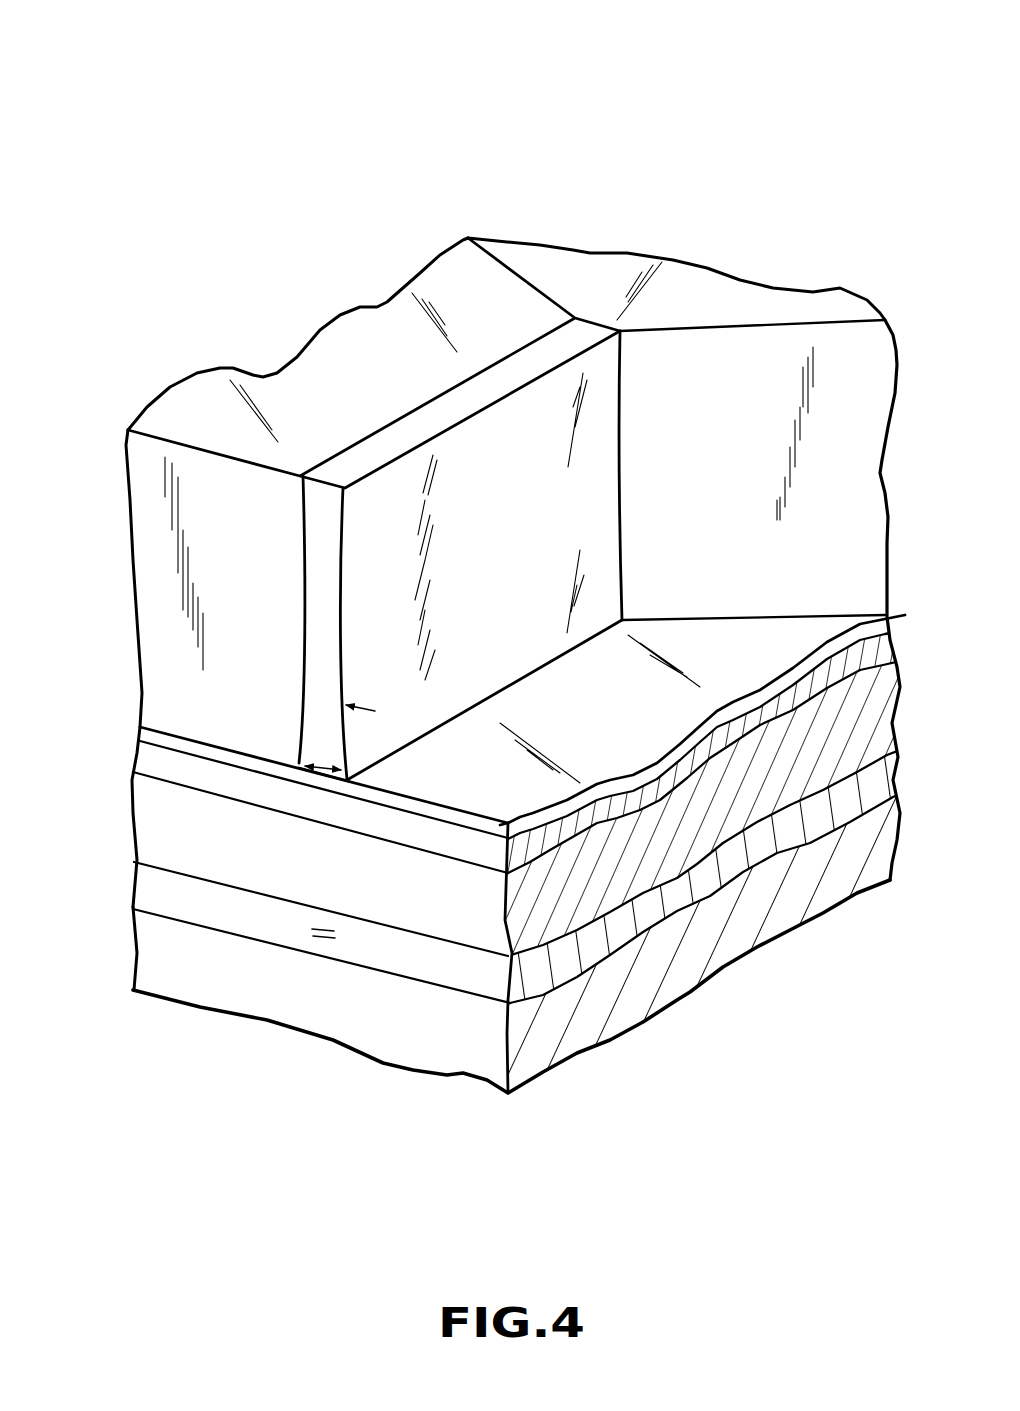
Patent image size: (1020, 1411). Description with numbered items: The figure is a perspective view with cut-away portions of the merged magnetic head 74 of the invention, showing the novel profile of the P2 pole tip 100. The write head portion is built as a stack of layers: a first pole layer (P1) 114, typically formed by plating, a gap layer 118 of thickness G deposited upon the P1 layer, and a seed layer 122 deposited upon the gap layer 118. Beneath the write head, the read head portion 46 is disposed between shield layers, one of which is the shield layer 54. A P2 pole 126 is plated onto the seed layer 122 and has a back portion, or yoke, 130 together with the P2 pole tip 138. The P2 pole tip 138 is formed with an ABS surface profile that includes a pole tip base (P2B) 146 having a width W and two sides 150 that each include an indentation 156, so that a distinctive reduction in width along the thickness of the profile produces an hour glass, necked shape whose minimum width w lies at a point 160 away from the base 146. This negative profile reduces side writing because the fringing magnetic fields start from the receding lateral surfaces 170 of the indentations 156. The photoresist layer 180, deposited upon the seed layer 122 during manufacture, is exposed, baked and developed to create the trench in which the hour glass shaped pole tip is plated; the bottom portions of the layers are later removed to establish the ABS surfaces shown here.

The merged magnetic head 74 is at (611, 58).
The back portion (yoke) 130 is at (698, 290).
The P2 pole 126 is at (527, 315).
The P2 pole tip 138 is at (450, 400).
The sides 150 is at (593, 469).
The indentation 156 is at (509, 611).
The photoresist layer 180 is at (123, 565).
The P2 pole tip 100 is at (325, 632).
The point of minimum width 160 is at (323, 696).
The receding lateral surfaces 170 is at (298, 693).
The pole tip base (P2B) 146 is at (314, 787).
The seed layer 122 is at (141, 726).
The gap layer 118 is at (139, 745).
The first pole layer (P1) 114 is at (130, 795).
The read head portion 46 is at (318, 927).
The shield layer 54 is at (132, 932).